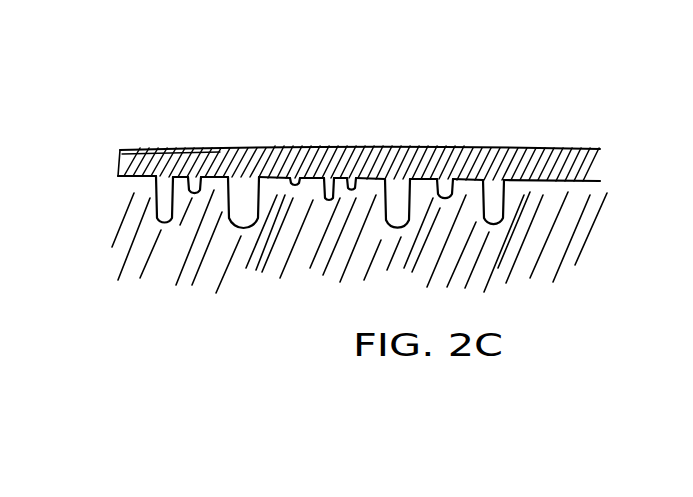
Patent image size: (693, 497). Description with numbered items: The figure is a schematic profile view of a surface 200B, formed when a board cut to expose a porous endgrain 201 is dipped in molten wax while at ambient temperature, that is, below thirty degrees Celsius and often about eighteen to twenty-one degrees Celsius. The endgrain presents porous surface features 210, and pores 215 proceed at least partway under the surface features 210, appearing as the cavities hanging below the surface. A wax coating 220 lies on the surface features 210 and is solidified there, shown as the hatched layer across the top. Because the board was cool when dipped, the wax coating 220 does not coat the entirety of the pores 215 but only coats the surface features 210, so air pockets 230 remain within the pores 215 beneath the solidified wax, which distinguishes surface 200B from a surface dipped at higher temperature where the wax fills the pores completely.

The surface 200B is at (552, 81).
The porous endgrain 201 is at (258, 132).
The wax coating 220 is at (308, 164).
The surface features 210 is at (423, 165).
The air pockets 230 is at (240, 200).
The pores 215 is at (330, 205).